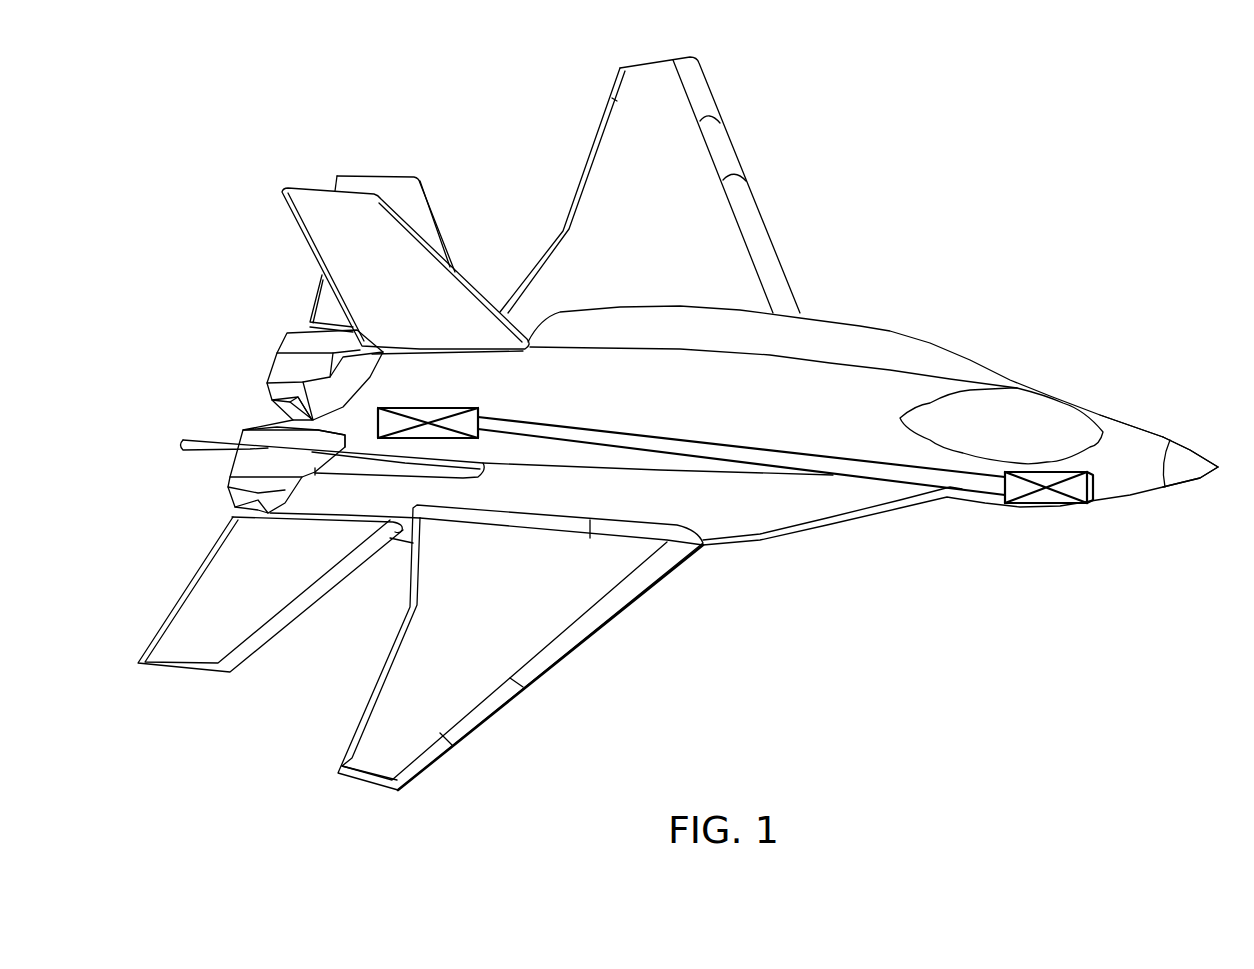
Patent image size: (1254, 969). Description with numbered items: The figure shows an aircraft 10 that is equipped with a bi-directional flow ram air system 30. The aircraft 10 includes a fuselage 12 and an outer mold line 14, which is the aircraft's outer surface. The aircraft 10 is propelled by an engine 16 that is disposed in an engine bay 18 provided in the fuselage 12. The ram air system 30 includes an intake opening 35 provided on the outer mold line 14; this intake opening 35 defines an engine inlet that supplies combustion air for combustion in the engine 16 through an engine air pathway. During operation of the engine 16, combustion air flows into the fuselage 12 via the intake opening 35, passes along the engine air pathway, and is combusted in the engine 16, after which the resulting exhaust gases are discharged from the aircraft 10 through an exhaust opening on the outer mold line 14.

The aircraft 10 is at (1182, 255).
The fuselage 12 is at (1117, 427).
The outer mold line 14 is at (1155, 419).
The engine 16 is at (317, 413).
The engine bay 18 is at (428, 408).
The bi-directional flow ram air system 30 is at (1048, 497).
The intake opening 35 is at (1097, 492).